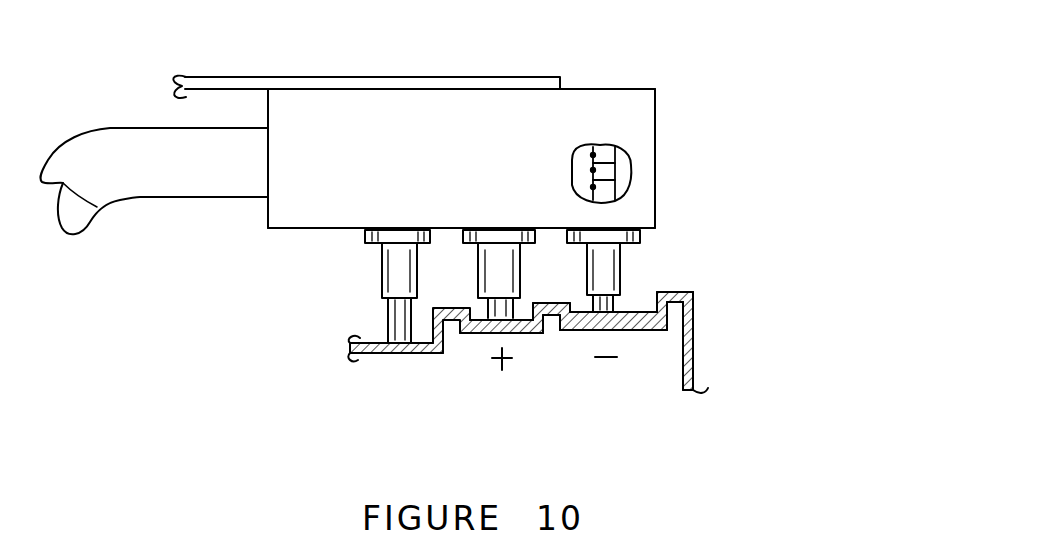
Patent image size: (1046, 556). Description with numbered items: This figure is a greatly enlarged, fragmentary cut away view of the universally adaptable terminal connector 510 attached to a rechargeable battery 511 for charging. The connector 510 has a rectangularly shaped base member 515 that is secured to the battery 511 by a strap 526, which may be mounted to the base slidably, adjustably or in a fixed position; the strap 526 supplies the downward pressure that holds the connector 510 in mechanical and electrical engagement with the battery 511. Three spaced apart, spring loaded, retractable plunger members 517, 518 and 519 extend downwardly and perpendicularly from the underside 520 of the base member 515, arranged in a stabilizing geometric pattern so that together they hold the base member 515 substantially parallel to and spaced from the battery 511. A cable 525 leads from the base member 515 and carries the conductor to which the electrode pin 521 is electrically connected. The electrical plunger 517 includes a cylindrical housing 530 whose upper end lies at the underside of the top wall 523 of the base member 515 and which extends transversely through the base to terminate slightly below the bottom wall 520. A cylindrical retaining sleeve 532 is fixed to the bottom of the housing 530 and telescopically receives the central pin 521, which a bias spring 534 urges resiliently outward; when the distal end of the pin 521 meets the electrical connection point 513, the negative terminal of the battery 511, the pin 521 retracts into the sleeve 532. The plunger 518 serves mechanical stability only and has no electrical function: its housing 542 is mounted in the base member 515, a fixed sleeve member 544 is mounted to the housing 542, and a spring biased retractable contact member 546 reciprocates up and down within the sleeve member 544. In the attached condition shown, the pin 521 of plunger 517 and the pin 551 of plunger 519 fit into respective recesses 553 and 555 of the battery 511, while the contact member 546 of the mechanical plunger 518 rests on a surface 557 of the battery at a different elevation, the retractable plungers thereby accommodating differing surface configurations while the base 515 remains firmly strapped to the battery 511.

The universally adaptable terminal connector 510 is at (190, 347).
The rechargeable battery 511 is at (697, 388).
The electrical connection point 513 is at (645, 300).
The base member 515 is at (656, 100).
The plunger member 517 is at (620, 250).
The plunger member 518 is at (387, 268).
The plunger member 519 is at (518, 282).
The underside 520 is at (270, 232).
The electrode pin 521 is at (632, 165).
The top wall 523 is at (638, 88).
The cable 525 is at (143, 198).
The strap 526 is at (231, 77).
The housing 530 is at (567, 250).
The retaining sleeve 532 is at (602, 277).
The bias spring 534 is at (600, 145).
The housing 542 is at (360, 243).
The fixed sleeve member 544 is at (393, 357).
The contact member 546 is at (383, 317).
The pin 551 is at (500, 290).
The recess 553 is at (575, 335).
The recess 555 is at (483, 337).
The surface 557 is at (382, 357).